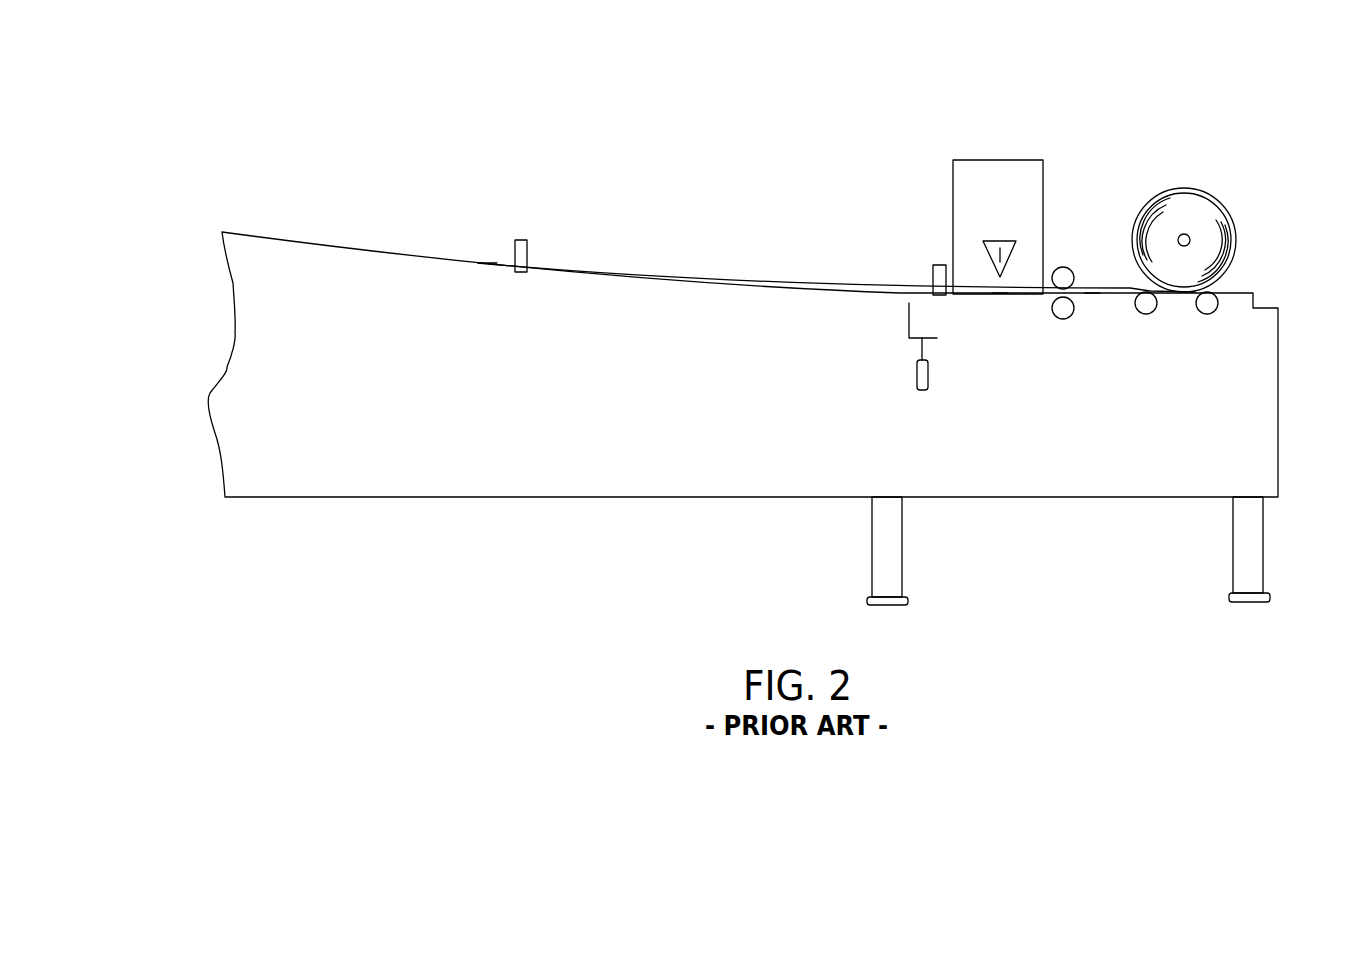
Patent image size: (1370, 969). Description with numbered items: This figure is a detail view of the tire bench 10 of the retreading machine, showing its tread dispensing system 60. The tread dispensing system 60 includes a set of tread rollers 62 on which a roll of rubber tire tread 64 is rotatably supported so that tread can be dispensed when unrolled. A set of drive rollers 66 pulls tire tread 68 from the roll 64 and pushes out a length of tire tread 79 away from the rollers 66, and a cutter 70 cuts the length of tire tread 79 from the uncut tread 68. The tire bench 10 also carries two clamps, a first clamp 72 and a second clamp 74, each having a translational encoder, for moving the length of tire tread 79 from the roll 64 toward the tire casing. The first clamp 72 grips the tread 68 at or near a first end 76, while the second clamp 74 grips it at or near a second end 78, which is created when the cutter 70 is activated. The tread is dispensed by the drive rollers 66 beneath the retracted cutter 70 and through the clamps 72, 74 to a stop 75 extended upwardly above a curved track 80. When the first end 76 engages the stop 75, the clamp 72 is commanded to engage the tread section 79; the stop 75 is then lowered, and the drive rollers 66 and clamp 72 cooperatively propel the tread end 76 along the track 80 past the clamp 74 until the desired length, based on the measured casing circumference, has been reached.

The tire bench 10 is at (688, 120).
The tread dispensing system 60 is at (1082, 148).
The tread rollers 62 is at (1153, 315).
The roll of rubber tire tread 64 is at (1221, 204).
The drive rollers 66 is at (1063, 277).
The tire tread 68 is at (1093, 294).
The cutter 70 is at (984, 253).
The first clamp 72 is at (521, 240).
The second clamp 74 is at (932, 280).
The stop 75 is at (907, 312).
The first end 76 is at (478, 262).
The second end 78 is at (1000, 294).
The length of tire tread 79 is at (705, 279).
The curved track 80 is at (380, 254).